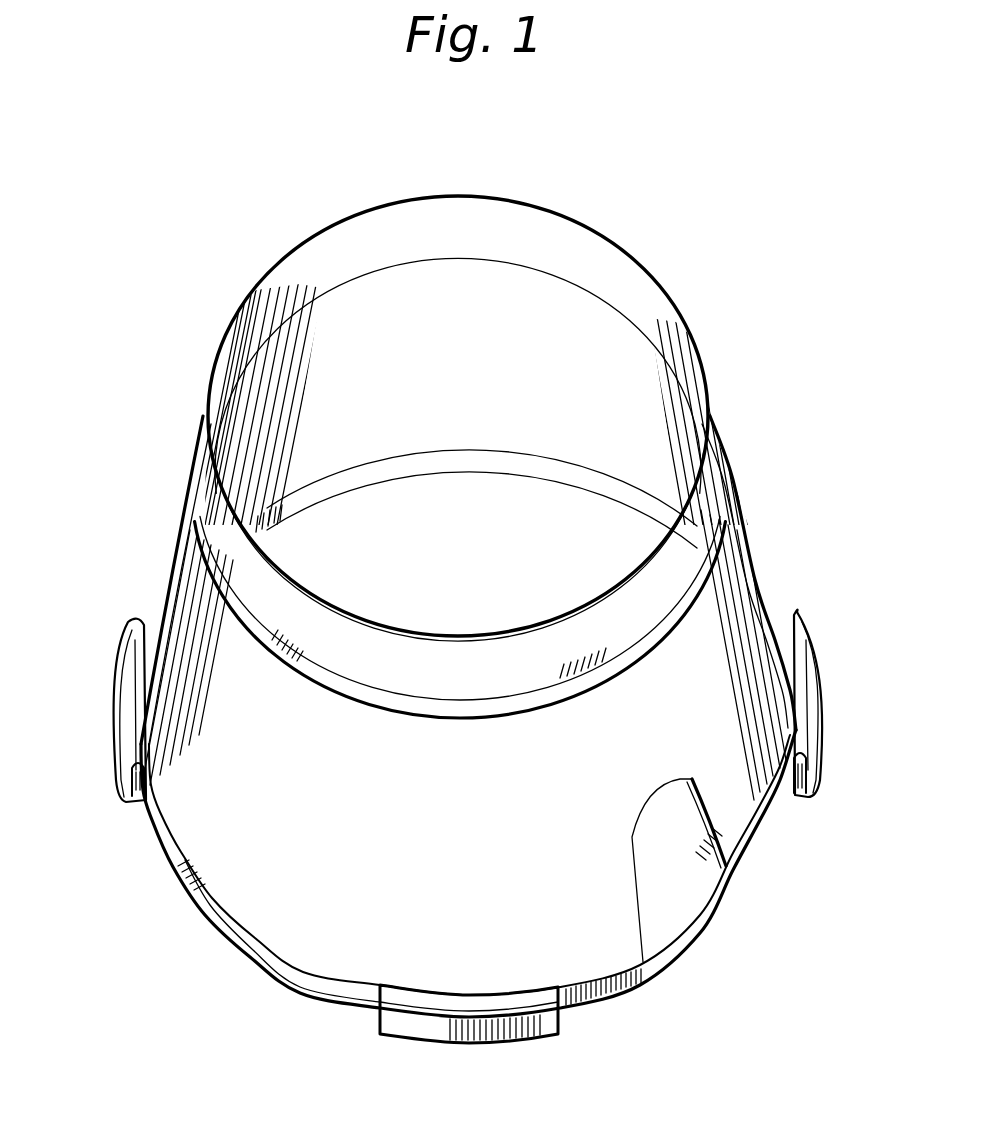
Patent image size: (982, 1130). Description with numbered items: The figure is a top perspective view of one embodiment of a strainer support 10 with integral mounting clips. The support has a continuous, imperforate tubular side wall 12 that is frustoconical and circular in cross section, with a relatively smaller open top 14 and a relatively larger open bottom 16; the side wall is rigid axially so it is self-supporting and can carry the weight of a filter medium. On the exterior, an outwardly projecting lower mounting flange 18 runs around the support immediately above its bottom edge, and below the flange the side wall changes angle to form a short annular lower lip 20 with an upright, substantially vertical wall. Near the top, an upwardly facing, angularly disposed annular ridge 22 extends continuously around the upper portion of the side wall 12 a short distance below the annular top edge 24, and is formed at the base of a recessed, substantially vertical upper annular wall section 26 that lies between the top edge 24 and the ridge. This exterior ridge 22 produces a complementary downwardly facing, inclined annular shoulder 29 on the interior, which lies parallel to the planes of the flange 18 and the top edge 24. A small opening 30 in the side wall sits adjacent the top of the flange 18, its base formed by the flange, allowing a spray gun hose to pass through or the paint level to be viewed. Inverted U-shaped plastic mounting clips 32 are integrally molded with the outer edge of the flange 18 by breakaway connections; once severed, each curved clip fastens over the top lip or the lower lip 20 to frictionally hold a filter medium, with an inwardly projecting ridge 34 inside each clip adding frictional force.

The strainer support 10 is at (155, 515).
The tubular side wall 12 is at (738, 537).
The open top 14 is at (460, 433).
The open bottom 16 is at (434, 478).
The lower mounting flange 18 is at (268, 966).
The lower lip 20 is at (603, 985).
The annular ridge 22 is at (618, 662).
The top edge 24 is at (418, 198).
The upper annular wall section 26 is at (546, 228).
The annular shoulder 29 is at (405, 262).
The opening 30 is at (640, 895).
The mounting clips 32 is at (806, 655).
The ridge 34 is at (801, 792).